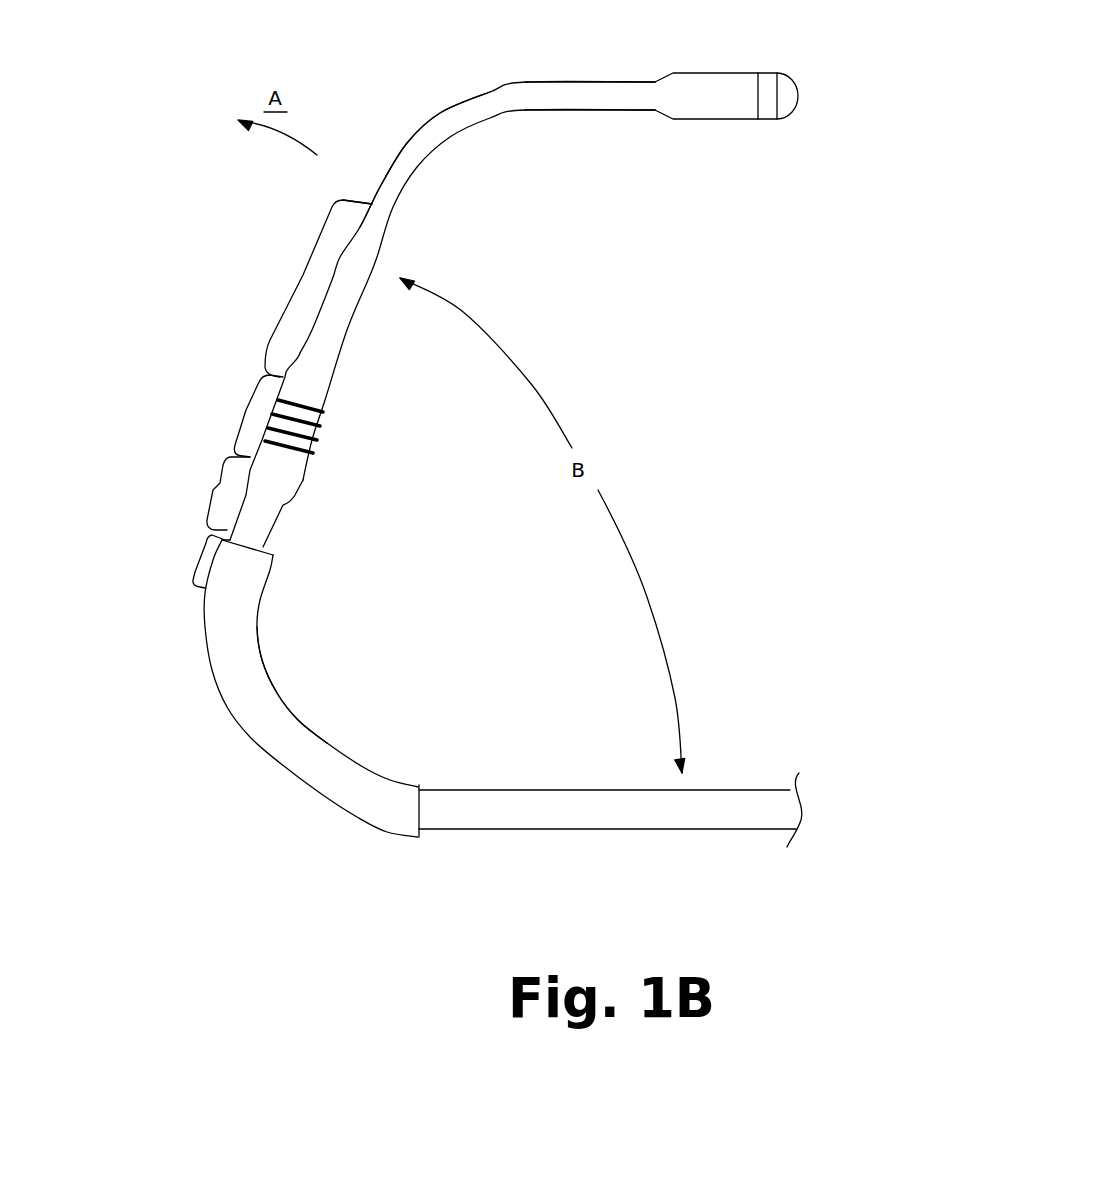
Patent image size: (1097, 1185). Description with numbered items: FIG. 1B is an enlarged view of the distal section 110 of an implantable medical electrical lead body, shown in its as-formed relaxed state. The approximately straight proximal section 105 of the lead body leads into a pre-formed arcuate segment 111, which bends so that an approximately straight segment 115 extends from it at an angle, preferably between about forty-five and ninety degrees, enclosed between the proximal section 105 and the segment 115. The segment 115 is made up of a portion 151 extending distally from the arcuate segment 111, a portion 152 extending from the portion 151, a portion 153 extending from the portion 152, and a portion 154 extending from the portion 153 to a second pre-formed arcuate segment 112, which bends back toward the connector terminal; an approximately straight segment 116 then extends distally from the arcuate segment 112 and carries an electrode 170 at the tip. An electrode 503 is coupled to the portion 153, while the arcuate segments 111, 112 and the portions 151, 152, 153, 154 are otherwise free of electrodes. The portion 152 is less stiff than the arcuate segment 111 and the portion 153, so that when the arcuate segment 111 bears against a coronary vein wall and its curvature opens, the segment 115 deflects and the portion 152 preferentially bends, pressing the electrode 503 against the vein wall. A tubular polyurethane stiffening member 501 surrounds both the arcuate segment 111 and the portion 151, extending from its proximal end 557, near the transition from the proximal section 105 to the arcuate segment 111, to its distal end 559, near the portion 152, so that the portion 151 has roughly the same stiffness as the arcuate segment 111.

The distal section 110 is at (118, 195).
The pre-formed arcuate segment 112 is at (515, 75).
The approximately straight segment 116 is at (757, 63).
The electrode 170 is at (787, 93).
The approximately straight segment 115 is at (337, 197).
The portion 154 is at (306, 272).
The portion 153 is at (246, 404).
The portion 152 is at (219, 483).
The portion 151 is at (205, 548).
The electrode 503 is at (313, 420).
The distal end 559 is at (250, 543).
The stiffening member 501 is at (277, 725).
The pre-formed arcuate segment 111 is at (421, 843).
The proximal section 105 is at (530, 777).
The proximal end 557 is at (420, 807).